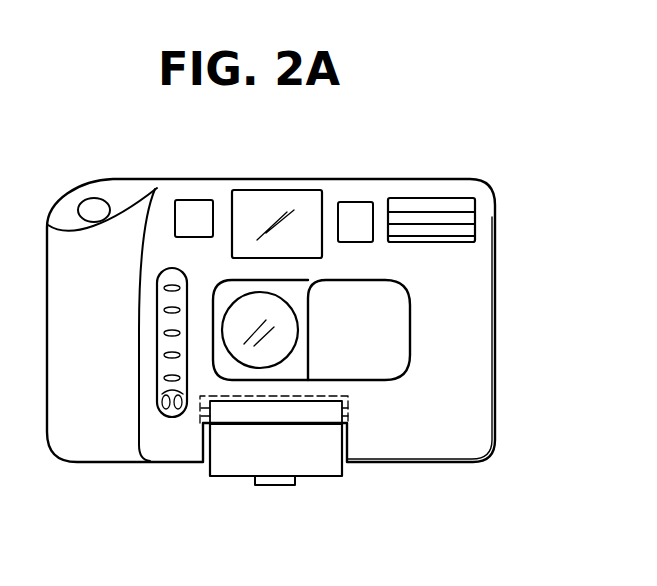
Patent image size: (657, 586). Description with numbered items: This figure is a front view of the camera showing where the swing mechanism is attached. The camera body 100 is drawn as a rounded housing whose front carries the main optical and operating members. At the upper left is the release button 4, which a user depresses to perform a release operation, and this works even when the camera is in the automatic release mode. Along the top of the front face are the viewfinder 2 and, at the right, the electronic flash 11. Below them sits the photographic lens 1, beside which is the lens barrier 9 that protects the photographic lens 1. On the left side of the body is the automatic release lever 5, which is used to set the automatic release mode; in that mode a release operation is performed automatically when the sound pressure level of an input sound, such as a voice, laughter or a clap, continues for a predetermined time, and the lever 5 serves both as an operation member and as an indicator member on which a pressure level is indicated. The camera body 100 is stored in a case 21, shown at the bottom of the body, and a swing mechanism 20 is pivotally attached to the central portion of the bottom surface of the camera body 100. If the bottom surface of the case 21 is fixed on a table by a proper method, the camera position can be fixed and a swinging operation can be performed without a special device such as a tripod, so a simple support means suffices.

The camera body 100 is at (463, 308).
The release button 4 is at (93, 198).
The photographic lens 1 is at (247, 317).
The viewfinder 2 is at (273, 207).
The electronic flash 11 is at (430, 217).
The lens barrier 9 is at (373, 345).
The automatic release lever 5 is at (163, 322).
The case 21 is at (237, 452).
The swing mechanism 20 is at (306, 474).